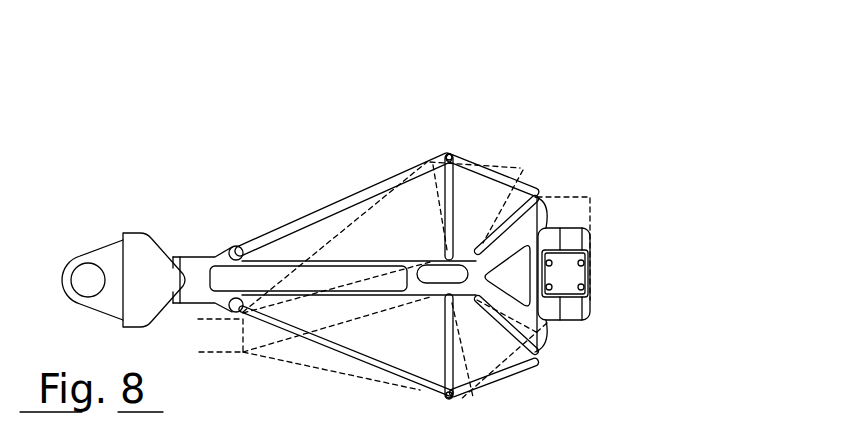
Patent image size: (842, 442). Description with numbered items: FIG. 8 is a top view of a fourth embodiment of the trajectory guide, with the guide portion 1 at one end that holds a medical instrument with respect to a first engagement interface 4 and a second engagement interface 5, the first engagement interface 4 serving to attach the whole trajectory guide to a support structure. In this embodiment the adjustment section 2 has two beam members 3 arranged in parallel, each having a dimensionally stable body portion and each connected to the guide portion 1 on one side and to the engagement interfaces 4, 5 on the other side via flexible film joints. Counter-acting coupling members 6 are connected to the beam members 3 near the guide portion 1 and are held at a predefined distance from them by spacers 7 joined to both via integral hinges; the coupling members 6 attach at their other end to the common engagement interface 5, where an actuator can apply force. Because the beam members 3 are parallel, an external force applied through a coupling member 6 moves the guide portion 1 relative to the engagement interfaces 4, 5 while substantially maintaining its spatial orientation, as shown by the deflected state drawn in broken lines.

The guide portion 1 is at (108, 258).
The adjustment section 2 is at (464, 97).
The beam member 3 is at (337, 293).
The first engagement interface 4 is at (441, 278).
The second engagement interface 5 is at (560, 273).
The coupling member 6 is at (357, 358).
The spacer 7 is at (450, 197).